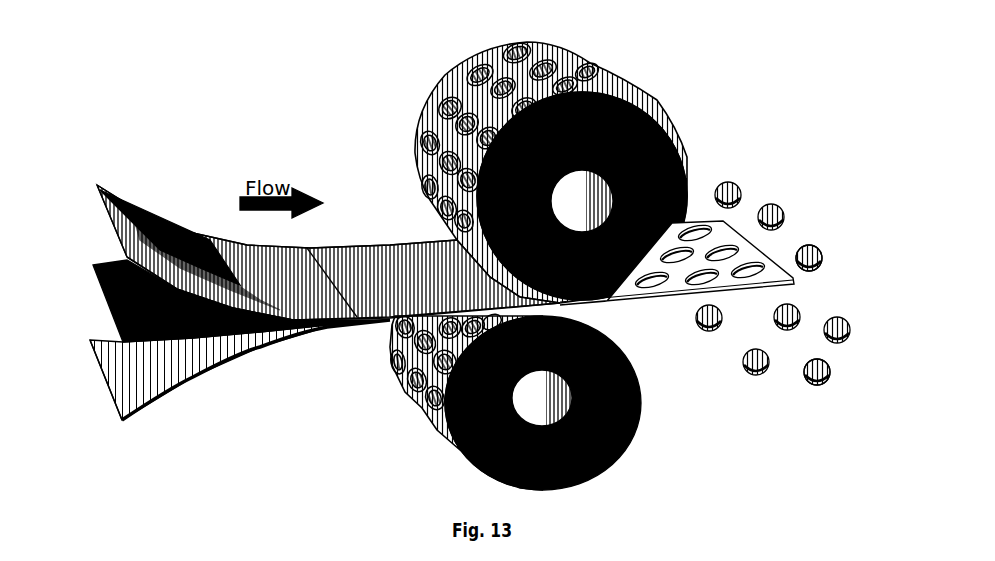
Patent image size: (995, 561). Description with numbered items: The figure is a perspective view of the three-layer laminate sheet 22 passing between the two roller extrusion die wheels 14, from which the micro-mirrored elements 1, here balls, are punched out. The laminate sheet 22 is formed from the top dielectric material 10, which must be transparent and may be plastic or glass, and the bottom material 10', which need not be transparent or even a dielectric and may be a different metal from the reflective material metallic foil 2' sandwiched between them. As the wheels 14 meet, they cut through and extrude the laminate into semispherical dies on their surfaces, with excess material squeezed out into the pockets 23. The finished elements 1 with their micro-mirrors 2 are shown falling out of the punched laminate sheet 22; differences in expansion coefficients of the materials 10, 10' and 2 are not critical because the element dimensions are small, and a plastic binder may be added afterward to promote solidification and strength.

The micro-mirrored element 1 is at (836, 218).
The micro-mirror 2 is at (773, 283).
The reflective material metallic foil 2' is at (231, 283).
The top dielectric material 10 is at (328, 251).
The bottom material 10' is at (240, 371).
The two roller extrusion die wheel 14 is at (673, 130).
The laminate sheet 22 is at (420, 146).
The pocket 23 is at (458, 92).